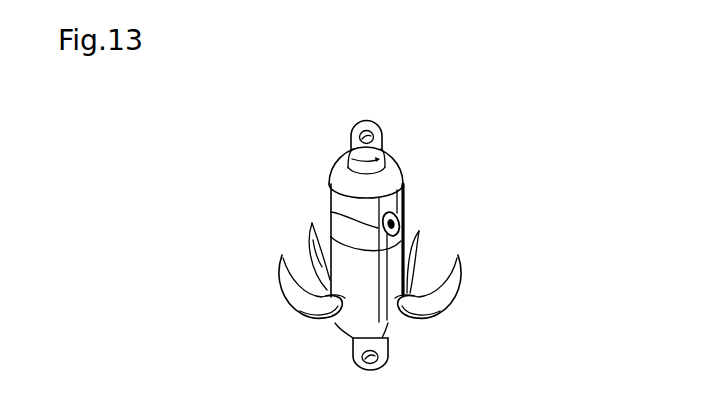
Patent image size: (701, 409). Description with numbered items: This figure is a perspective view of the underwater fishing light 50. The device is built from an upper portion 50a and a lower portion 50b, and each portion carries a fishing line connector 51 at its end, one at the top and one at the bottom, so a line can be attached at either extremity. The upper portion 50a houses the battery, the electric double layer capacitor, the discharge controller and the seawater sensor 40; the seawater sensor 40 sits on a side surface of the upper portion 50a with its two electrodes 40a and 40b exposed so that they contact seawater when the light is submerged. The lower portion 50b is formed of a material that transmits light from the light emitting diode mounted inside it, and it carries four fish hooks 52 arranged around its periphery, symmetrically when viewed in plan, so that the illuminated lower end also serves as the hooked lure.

The underwater fishing light 50 is at (486, 150).
The upper portion 50a is at (403, 168).
The lower portion 50b is at (340, 327).
The fishing line connector 51 is at (382, 135).
The fish hook 52 is at (458, 288).
The seawater sensor 40 is at (405, 213).
The electrode 40a is at (331, 212).
The electrode 40b is at (407, 232).